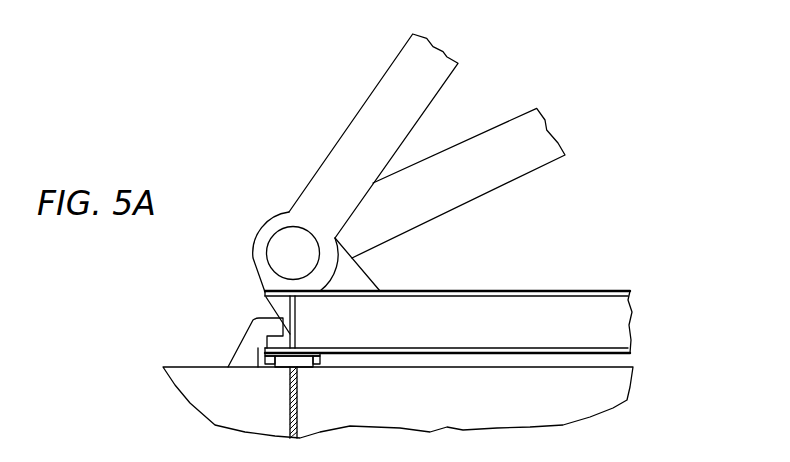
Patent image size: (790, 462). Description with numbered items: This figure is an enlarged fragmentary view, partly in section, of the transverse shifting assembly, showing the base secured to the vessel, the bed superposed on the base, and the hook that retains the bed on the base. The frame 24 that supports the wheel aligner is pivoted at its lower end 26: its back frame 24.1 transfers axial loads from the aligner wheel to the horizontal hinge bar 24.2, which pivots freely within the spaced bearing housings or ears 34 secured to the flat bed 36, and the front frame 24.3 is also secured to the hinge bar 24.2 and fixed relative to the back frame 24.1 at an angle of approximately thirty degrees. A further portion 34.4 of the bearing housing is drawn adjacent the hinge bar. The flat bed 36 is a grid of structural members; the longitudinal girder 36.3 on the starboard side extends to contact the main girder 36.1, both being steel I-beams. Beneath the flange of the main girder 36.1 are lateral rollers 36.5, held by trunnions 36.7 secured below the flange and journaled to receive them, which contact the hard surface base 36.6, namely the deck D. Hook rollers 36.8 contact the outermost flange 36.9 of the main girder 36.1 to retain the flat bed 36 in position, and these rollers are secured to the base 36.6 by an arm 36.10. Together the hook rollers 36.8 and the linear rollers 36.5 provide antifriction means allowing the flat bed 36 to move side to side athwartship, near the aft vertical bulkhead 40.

The frame 24 is at (343, 123).
The back frame 24.1 is at (327, 182).
The horizontal hinge bar 24.2 is at (278, 248).
The front frame 24.3 is at (493, 179).
The lower end 26 is at (293, 206).
The bearing housings or ears 34 is at (352, 282).
The arcuate bracket portion 34.4 is at (337, 248).
The flat bed 36 is at (448, 326).
The main girder 36.1 is at (295, 312).
The longitudinal girder 36.3 is at (537, 310).
The lateral rollers 36.5 is at (285, 362).
The hard surface base 36.6 is at (450, 365).
The trunnions 36.7 is at (320, 358).
The hook rollers 36.8 is at (266, 316).
The outermost flange 36.9 is at (258, 353).
The arm 36.10 is at (242, 362).
The aft vertical bulkhead 40 is at (297, 397).
The deck D is at (171, 363).